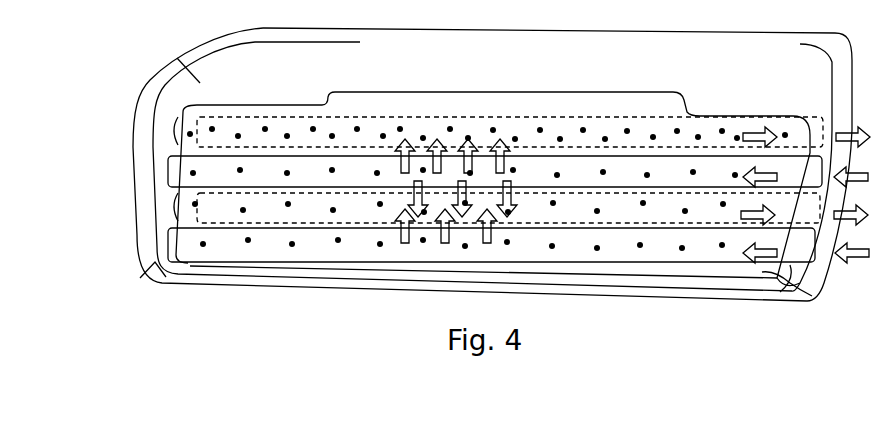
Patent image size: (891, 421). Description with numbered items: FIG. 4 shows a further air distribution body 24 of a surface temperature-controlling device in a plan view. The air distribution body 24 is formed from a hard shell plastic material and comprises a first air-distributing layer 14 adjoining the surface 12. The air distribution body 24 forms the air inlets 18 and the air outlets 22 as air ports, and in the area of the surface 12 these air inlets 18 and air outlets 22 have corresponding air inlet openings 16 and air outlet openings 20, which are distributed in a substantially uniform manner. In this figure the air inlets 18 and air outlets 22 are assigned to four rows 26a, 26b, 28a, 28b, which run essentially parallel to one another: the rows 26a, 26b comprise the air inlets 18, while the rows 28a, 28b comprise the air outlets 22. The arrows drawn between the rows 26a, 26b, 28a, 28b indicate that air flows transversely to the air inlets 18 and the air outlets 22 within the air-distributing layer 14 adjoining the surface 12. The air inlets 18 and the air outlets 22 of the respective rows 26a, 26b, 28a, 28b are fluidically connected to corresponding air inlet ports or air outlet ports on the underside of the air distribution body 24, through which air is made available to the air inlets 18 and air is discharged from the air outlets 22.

The surface 12 is at (343, 107).
The first air-distributing layer 14 is at (768, 274).
The air inlet openings 16 is at (558, 176).
The air inlets 18 is at (598, 250).
The air outlet openings 20 is at (495, 130).
The air outlets 22 is at (724, 222).
The air distribution body 24 is at (147, 73).
The row 26a is at (168, 250).
The row 26b is at (168, 161).
The row 28a is at (170, 192).
The row 28b is at (166, 121).